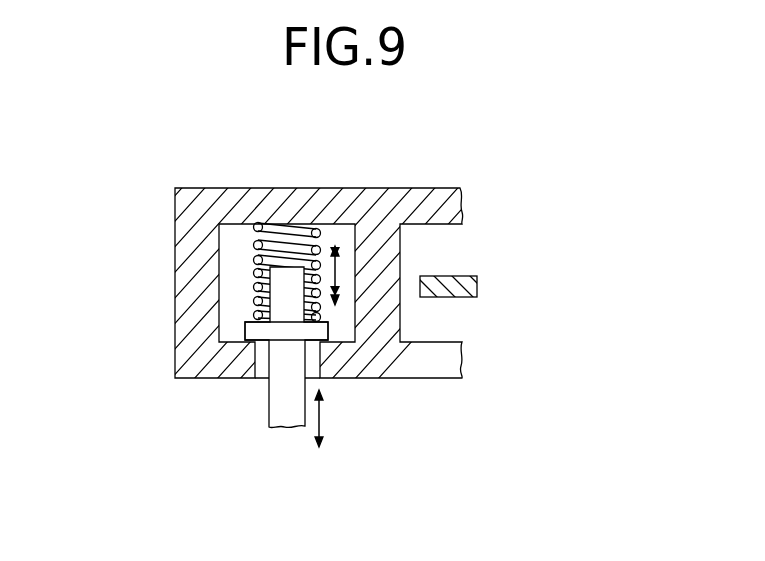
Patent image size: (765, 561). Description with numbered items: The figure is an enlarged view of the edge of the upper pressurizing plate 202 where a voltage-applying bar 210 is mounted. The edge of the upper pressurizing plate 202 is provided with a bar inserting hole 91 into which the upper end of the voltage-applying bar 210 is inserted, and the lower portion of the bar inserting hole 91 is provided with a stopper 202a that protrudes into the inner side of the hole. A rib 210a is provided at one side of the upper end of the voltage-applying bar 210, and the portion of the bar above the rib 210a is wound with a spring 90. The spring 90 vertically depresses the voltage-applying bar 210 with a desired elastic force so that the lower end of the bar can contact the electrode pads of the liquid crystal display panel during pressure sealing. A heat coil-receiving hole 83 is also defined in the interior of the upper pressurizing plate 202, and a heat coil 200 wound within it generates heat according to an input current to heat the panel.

The heat coil-receiving hole 83 is at (423, 263).
The spring 90 is at (322, 235).
The bar inserting hole 91 is at (242, 272).
The heat coil 200 is at (476, 282).
The upper pressurizing plate 202 is at (427, 188).
The stopper 202a is at (343, 380).
The voltage-applying bar 210 is at (269, 412).
The rib 210a is at (250, 330).